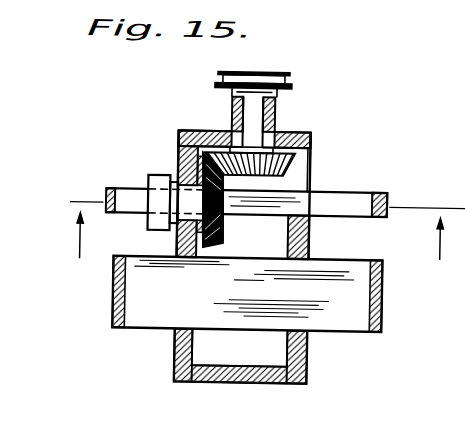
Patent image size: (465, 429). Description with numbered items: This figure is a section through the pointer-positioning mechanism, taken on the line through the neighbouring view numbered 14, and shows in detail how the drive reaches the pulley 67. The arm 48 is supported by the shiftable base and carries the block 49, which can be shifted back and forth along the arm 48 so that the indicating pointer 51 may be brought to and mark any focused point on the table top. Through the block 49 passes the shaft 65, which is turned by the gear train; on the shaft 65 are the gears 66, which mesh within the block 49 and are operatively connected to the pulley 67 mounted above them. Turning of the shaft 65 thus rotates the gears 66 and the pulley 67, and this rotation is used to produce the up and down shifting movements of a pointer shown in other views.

The section line 14- 14 is at (263, 262).
The arm 48 is at (366, 293).
The block 49 is at (177, 139).
The indicating pointer 51 is at (246, 392).
The shaft 65 is at (344, 200).
The gears 66 is at (214, 166).
The pulley 67 is at (262, 82).